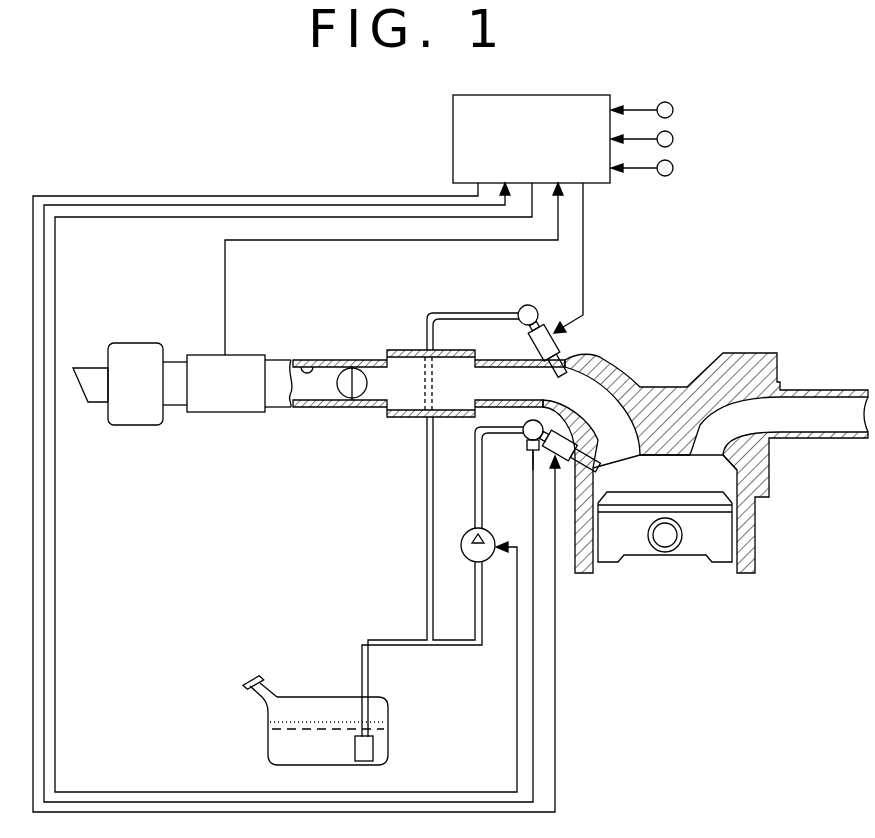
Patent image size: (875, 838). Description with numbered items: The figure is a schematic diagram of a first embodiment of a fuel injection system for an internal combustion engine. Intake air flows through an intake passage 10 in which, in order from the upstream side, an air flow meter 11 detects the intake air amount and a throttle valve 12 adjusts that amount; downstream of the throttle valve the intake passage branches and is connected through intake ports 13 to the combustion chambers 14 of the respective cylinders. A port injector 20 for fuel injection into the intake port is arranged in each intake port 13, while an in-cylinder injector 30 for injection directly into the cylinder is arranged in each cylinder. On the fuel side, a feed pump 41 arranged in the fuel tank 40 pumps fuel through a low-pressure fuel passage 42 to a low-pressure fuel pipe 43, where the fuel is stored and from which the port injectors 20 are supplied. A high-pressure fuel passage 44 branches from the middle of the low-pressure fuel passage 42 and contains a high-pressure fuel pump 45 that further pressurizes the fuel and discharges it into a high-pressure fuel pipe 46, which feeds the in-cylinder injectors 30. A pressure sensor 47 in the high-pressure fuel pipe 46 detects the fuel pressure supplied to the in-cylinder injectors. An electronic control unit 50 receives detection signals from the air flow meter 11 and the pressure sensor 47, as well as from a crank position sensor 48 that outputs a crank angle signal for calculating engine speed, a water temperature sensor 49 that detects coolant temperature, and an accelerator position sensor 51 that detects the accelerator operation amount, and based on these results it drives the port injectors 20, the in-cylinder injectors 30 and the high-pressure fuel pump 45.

The intake passage 10 is at (307, 362).
The air flow meter 11 is at (240, 355).
The throttle valve 12 is at (366, 376).
The intake port 13 is at (612, 393).
The combustion chamber 14 is at (683, 488).
The port injector 20 is at (533, 344).
The in-cylinder injector 30 is at (548, 463).
The fuel tank 40 is at (268, 743).
The feed pump 41 is at (374, 748).
The low-pressure fuel passage 42 is at (427, 590).
The low-pressure fuel pipe 43 is at (529, 304).
The high-pressure fuel passage 44 is at (475, 584).
The high-pressure fuel pump 45 is at (460, 546).
The high-pressure fuel pipe 46 is at (531, 420).
The pressure sensor 47 is at (532, 458).
The crank position sensor 48 is at (673, 110).
The water temperature sensor 49 is at (673, 139).
The electronic control unit 50 is at (453, 149).
The accelerator position sensor 51 is at (673, 168).